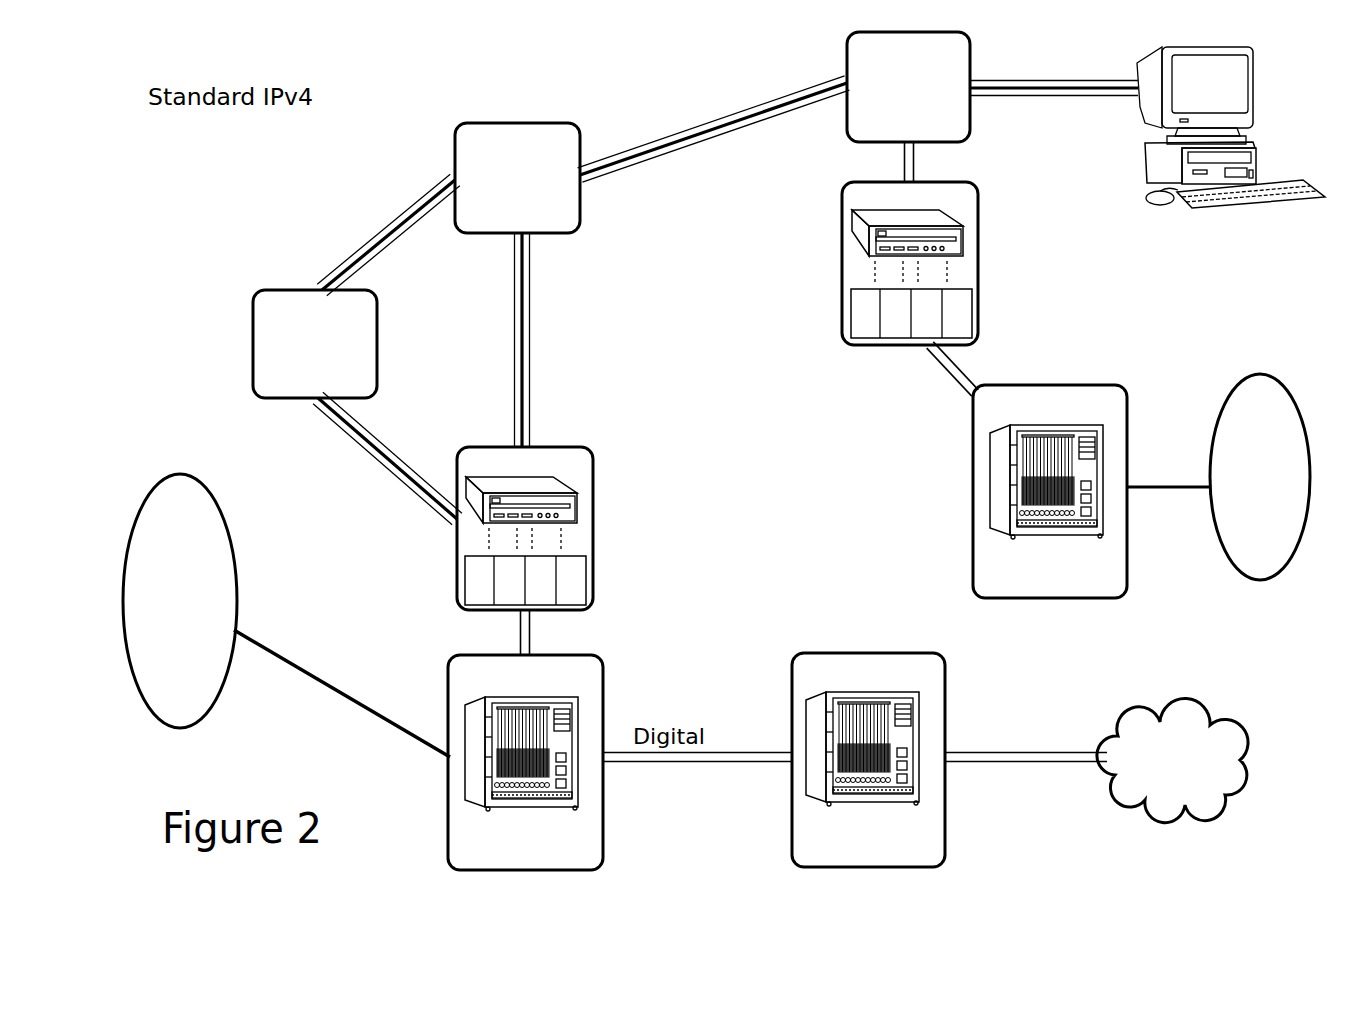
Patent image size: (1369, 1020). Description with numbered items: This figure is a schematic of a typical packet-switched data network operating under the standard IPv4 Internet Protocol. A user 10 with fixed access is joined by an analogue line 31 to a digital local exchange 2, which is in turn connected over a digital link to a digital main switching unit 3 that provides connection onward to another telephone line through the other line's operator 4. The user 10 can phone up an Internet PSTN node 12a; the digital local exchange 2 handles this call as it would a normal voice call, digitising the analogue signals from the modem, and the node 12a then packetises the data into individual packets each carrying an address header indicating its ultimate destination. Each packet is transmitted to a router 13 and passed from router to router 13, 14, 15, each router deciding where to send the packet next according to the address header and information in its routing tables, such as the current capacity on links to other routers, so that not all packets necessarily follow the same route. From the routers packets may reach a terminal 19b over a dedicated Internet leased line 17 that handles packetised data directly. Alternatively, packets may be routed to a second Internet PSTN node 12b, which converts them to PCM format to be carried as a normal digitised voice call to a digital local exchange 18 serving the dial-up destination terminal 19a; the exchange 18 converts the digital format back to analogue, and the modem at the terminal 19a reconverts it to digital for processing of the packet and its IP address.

The digital local exchange 2 is at (603, 703).
The digital main switching unit 3 is at (857, 653).
The other line's operator 4 is at (1240, 778).
The user 10 is at (214, 504).
The Internet PSTN node 12a is at (593, 479).
The Internet PSTN node 12b is at (842, 238).
The router 13 is at (253, 329).
The router 14 is at (455, 141).
The router 15 is at (847, 70).
The Internet leased line 17 is at (1062, 100).
The digital local exchange 18 is at (973, 492).
The terminal 19a is at (1292, 394).
The terminal 19b is at (1253, 99).
The analogue line 31 is at (263, 649).